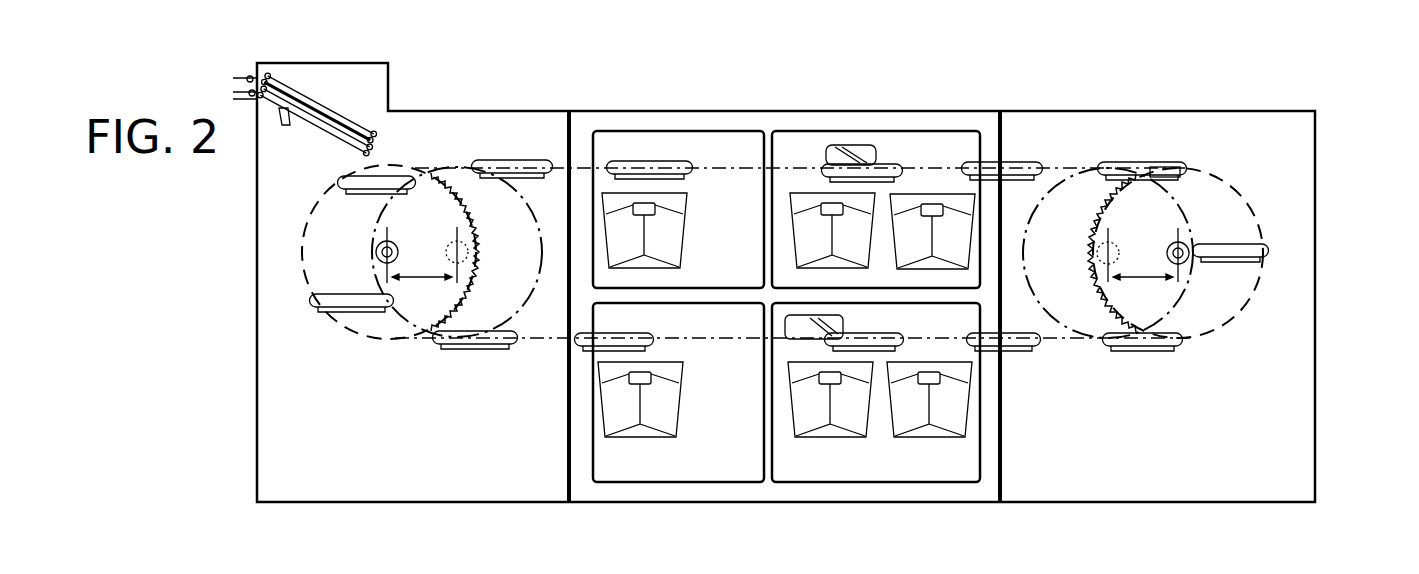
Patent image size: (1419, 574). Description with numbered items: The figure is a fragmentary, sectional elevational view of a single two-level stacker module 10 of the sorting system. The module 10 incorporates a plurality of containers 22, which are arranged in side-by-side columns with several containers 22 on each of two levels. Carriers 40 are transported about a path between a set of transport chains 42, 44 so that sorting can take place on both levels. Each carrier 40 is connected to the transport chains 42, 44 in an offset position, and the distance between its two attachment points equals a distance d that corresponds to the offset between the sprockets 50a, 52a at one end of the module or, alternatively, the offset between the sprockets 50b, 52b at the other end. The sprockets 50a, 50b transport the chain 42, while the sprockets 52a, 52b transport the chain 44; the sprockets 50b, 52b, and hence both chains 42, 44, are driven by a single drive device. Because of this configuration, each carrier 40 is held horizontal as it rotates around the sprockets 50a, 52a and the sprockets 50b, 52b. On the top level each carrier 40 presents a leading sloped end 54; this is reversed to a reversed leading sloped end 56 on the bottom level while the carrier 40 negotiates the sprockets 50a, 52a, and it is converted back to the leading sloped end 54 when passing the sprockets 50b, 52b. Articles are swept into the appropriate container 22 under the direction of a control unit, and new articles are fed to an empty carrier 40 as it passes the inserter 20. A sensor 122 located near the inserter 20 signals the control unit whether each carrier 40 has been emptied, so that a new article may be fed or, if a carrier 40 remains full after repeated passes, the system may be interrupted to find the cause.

The stacker module 10 is at (617, 110).
The inserter 20 is at (318, 108).
The containers 22 is at (687, 233).
The carriers 40 is at (505, 162).
The transport chain 42 is at (1223, 180).
The transport chain 44 is at (303, 232).
The sprocket 50a is at (1250, 300).
The sprocket 50b is at (400, 320).
The sprocket 52a is at (1077, 172).
The sprocket 52b is at (303, 272).
The leading sloped end 54 is at (563, 160).
The reversed leading sloped end 56 is at (418, 333).
The sensor 122 is at (280, 121).